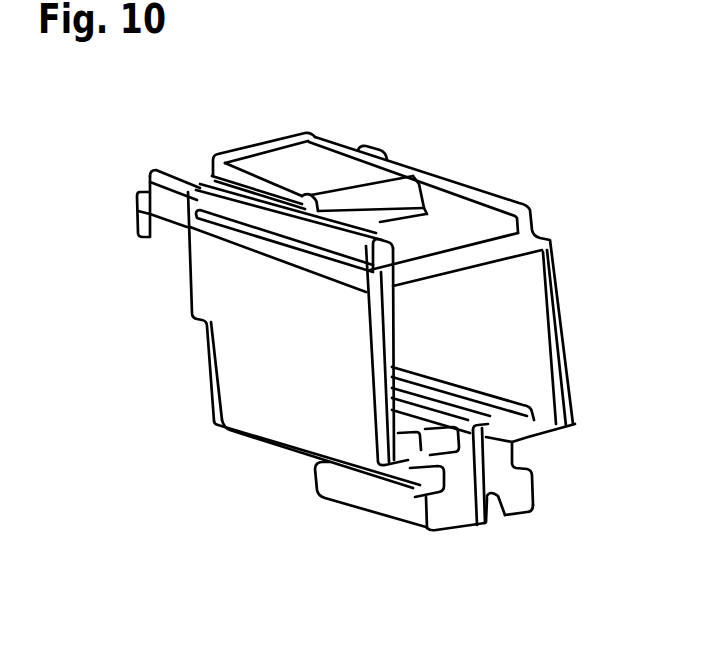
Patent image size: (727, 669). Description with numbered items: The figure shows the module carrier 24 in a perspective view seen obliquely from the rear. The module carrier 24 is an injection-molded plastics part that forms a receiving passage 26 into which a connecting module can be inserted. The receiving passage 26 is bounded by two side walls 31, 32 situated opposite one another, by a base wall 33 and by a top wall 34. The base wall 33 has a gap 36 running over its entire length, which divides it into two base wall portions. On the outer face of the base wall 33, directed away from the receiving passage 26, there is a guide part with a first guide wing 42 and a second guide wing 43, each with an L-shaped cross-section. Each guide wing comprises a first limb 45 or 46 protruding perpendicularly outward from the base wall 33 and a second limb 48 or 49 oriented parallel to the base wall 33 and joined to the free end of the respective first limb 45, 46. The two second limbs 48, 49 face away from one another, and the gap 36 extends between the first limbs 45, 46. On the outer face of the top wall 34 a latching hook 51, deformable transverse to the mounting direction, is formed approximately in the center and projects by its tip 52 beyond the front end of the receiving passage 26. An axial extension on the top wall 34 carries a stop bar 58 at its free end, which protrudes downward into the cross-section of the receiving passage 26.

The module carrier 24 is at (575, 214).
The receiving passage 26 is at (508, 362).
The side wall 31 is at (513, 311).
The side wall 32 is at (252, 392).
The base wall 33 is at (530, 441).
The top wall 34 is at (483, 258).
The gap 36 is at (498, 518).
The first guide wing 42 is at (534, 517).
The second guide wing 43 is at (468, 532).
The first limb 45 is at (498, 473).
The first limb 46 is at (428, 500).
The second limb 48 is at (508, 505).
The second limb 49 is at (457, 482).
The latching hook 51 is at (277, 172).
The tip 52 is at (234, 151).
The stop bar 58 is at (165, 230).